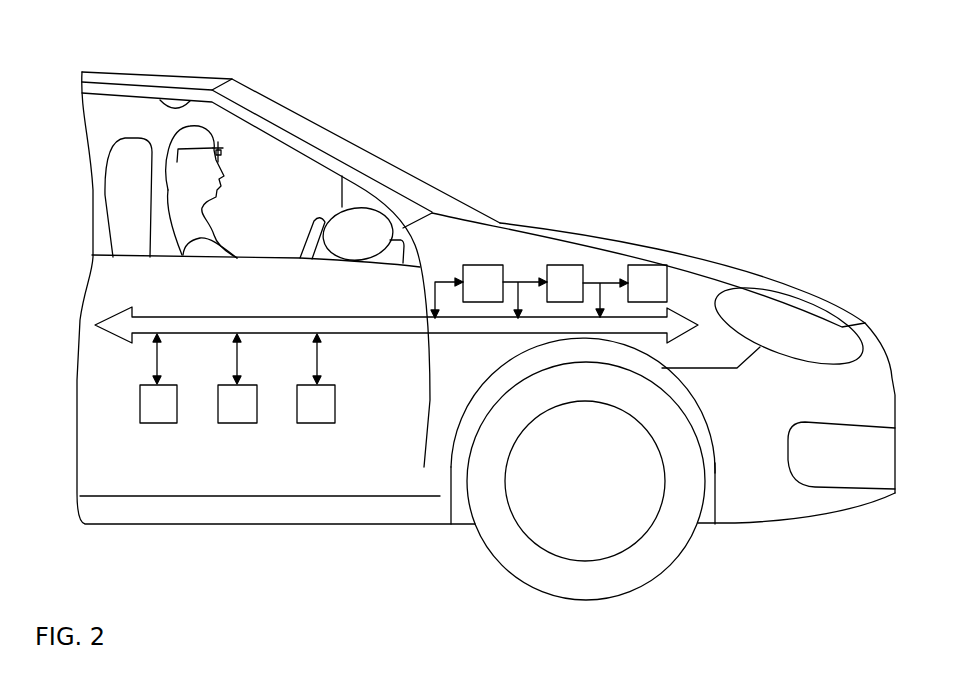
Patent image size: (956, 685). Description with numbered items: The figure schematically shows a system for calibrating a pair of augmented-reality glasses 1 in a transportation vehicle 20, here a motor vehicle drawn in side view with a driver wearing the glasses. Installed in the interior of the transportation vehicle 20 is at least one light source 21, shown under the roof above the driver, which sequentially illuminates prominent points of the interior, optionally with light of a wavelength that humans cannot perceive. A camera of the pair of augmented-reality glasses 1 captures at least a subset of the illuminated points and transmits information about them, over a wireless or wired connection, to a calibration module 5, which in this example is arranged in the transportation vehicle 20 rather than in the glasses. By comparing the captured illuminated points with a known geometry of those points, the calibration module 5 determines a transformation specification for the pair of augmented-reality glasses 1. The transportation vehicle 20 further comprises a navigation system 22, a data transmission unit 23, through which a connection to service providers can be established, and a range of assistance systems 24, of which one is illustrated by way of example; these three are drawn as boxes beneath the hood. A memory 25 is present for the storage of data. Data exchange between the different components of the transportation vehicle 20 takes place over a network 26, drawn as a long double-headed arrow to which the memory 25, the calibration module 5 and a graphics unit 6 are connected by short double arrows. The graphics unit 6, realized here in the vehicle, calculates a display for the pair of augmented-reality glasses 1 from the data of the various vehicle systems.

The pair of augmented-reality glasses 1 is at (203, 147).
The transportation vehicle 20 is at (758, 272).
The light source 21 is at (177, 107).
The navigation system 22 is at (482, 265).
The data transmission unit 23 is at (565, 265).
The assistance system 24 is at (650, 265).
The memory 25 is at (158, 423).
The calibration module 5 is at (238, 423).
The graphics unit 6 is at (318, 423).
The network 26 is at (113, 335).